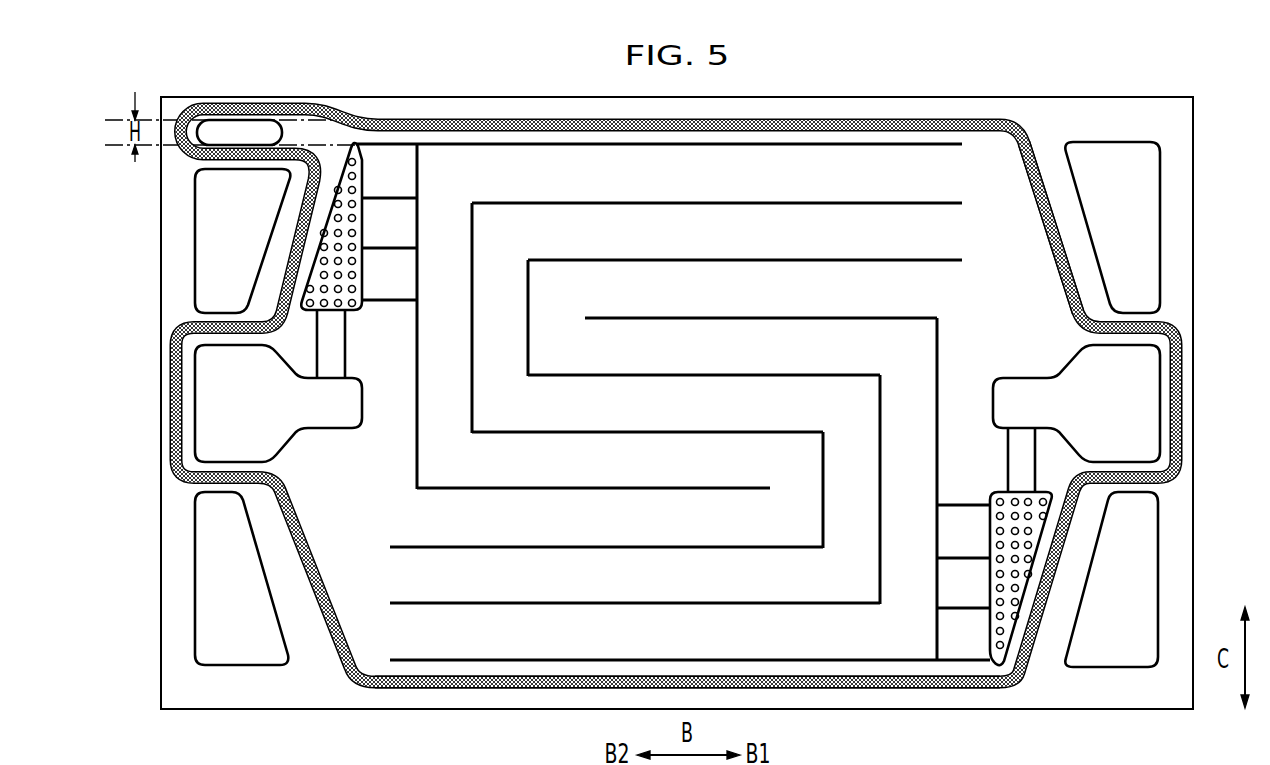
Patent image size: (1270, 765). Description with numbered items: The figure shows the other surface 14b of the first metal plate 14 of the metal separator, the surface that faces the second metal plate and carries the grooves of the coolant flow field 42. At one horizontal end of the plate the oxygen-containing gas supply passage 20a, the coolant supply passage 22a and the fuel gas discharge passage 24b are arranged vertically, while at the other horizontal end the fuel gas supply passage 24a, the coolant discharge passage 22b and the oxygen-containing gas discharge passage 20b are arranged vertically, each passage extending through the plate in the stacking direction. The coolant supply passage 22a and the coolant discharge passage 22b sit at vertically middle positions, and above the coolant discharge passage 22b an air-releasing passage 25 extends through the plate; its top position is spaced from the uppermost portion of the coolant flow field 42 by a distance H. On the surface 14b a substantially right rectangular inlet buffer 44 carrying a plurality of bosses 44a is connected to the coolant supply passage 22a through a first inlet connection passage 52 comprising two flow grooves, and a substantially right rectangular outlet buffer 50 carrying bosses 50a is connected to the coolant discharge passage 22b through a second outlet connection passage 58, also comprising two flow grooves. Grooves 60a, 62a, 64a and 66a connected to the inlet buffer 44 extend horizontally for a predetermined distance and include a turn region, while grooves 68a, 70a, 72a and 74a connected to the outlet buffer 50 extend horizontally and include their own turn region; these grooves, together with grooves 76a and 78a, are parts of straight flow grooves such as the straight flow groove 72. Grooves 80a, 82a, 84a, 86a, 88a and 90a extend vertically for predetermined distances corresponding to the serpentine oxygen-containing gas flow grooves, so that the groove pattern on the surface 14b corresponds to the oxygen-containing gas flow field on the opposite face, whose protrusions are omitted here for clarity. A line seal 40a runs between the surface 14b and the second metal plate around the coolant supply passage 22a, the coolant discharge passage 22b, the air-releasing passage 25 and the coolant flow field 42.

The first metal plate 14 is at (360, 61).
The surface of the first metal plate 14b is at (978, 692).
The air-releasing passage 25 is at (230, 132).
The coolant flow field 42 is at (940, 130).
The line seal 40a is at (1050, 255).
The straight flow groove 72 is at (366, 672).
The outlet buffer 50 is at (360, 226).
The bosses 50a is at (360, 291).
The second outlet connection passage 58 is at (346, 357).
The fuel gas supply passage 24a is at (242, 241).
The oxygen-containing gas supply passage 20a is at (1112, 227).
The coolant discharge passage 22b is at (278, 403).
The coolant supply passage 22a is at (1076, 403).
The oxygen-containing gas discharge passage 20b is at (241, 578).
The fuel gas discharge passage 24b is at (1111, 579).
The first inlet connection passage 52 is at (1036, 465).
The inlet buffer 44 is at (995, 578).
The bosses 44a is at (997, 542).
The groove 74a is at (652, 147).
The groove 72a is at (652, 206).
The groove 70a is at (652, 263).
The groove 68a is at (652, 321).
The groove 78a is at (652, 378).
The groove 76a is at (652, 435).
The groove 66a is at (652, 491).
The groove 64a is at (652, 550).
The groove 62a is at (652, 606).
The groove 60a is at (583, 658).
The groove 82a is at (419, 413).
The groove 86a is at (474, 383).
The groove 90a is at (530, 353).
The groove 80a is at (939, 431).
The groove 84a is at (882, 458).
The groove 88a is at (825, 488).